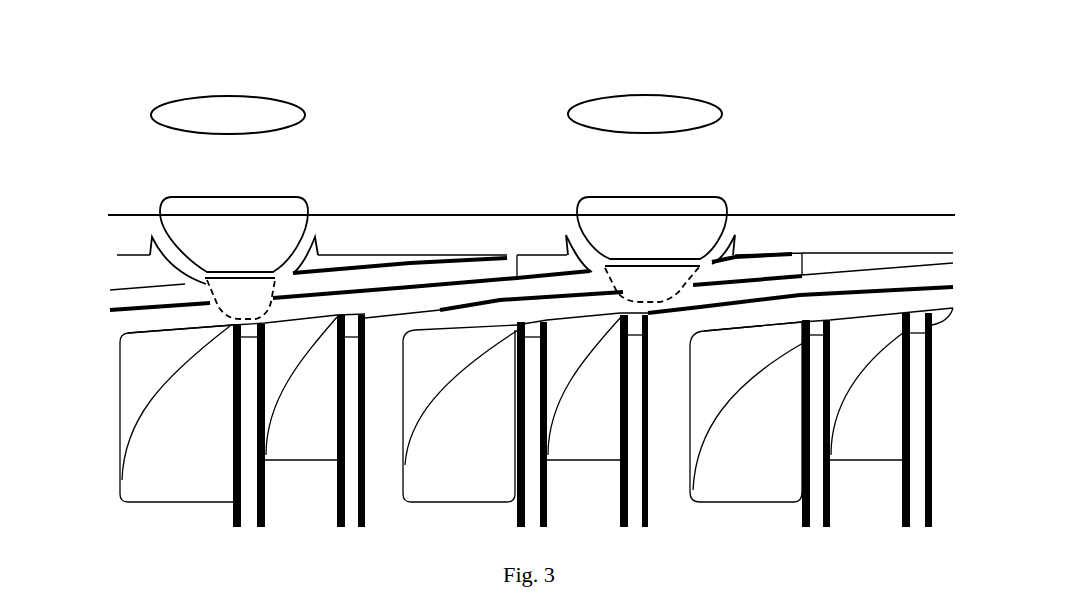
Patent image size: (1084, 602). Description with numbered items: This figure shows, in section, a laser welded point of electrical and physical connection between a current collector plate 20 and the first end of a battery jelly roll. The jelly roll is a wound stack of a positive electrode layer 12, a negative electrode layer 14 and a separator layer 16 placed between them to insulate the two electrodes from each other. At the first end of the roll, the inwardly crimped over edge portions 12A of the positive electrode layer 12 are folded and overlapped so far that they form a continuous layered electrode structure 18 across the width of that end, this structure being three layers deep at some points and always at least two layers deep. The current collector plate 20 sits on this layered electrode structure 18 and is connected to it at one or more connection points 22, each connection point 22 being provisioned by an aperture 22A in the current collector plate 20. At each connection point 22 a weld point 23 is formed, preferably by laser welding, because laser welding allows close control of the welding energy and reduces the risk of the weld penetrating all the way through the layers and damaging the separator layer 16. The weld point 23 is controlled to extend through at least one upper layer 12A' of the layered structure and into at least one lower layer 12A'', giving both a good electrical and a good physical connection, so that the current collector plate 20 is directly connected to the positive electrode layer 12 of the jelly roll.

The positive electrode layer 12 is at (665, 342).
The inwardly crimped over edge portions 12A is at (531, 220).
The upper layer of the layered structure 12A' is at (121, 272).
The lower layer of the layered structure 12A'' is at (497, 340).
The negative electrode layer 14 is at (860, 472).
The separator layer 16 is at (920, 447).
The layered electrode structure 18 is at (818, 270).
The current collector plate 20 is at (898, 227).
The connection point 22 is at (215, 245).
The aperture 22A is at (247, 270).
The weld point 23 is at (238, 297).